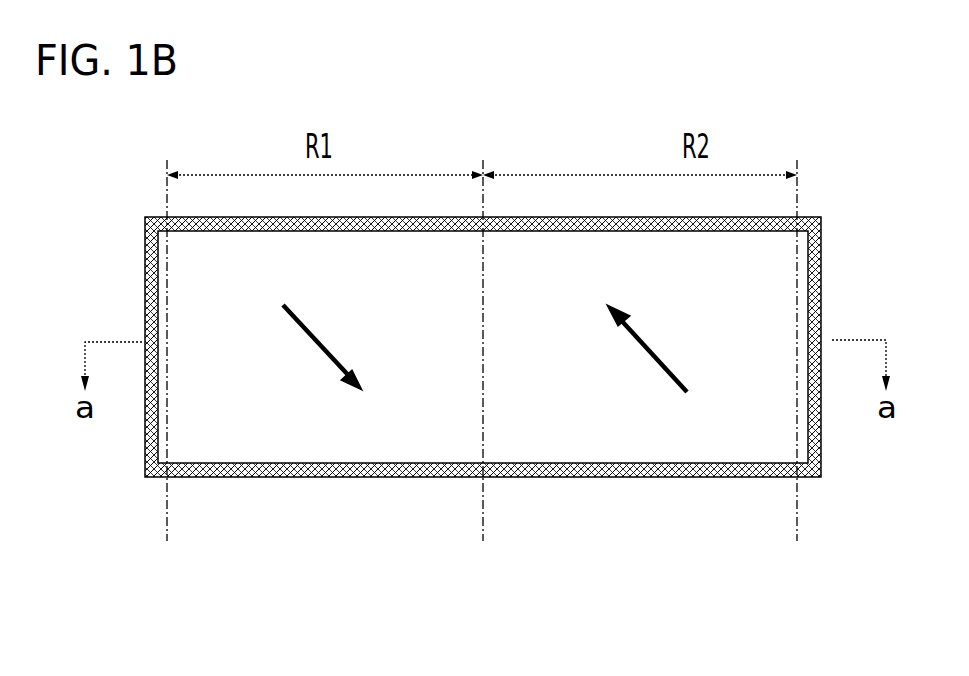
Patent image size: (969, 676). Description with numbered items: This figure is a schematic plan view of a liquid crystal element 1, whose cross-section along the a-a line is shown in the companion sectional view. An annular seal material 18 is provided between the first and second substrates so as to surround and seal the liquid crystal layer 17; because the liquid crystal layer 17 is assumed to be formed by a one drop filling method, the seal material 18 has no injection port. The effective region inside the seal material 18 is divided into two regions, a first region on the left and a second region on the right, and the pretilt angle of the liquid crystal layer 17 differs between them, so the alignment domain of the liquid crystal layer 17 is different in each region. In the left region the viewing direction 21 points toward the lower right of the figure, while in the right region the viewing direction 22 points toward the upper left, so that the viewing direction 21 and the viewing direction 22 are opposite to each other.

The liquid crystal element 1 is at (498, 638).
The liquid crystal layer 17 is at (673, 445).
The seal material 18 is at (822, 275).
The viewing direction 21 is at (315, 345).
The viewing direction 22 is at (650, 355).